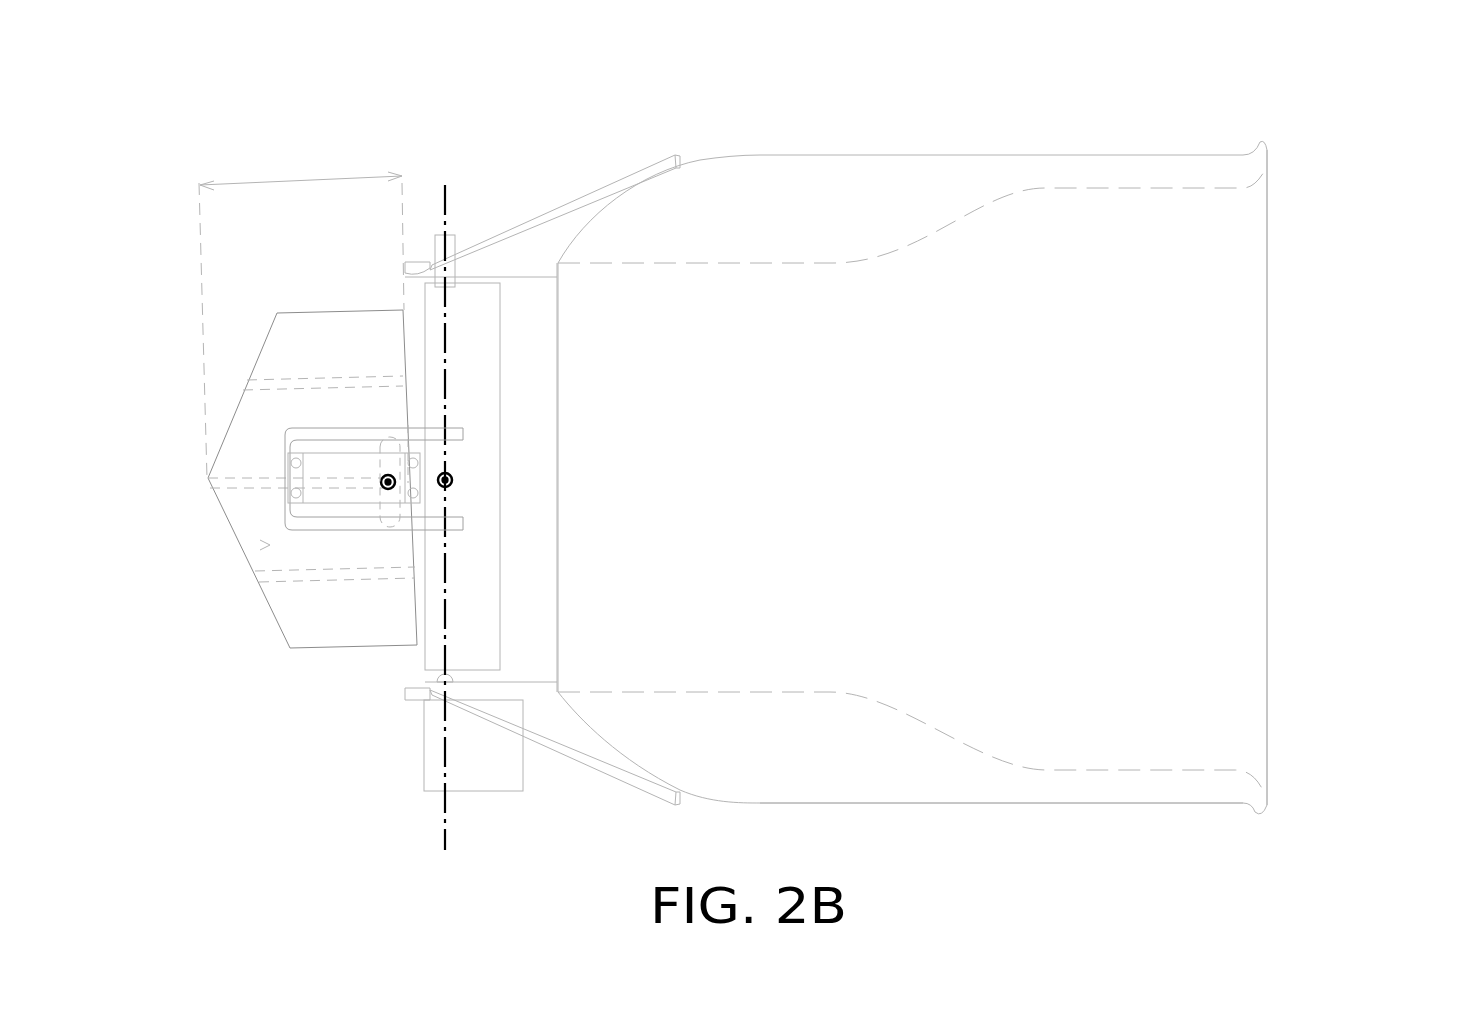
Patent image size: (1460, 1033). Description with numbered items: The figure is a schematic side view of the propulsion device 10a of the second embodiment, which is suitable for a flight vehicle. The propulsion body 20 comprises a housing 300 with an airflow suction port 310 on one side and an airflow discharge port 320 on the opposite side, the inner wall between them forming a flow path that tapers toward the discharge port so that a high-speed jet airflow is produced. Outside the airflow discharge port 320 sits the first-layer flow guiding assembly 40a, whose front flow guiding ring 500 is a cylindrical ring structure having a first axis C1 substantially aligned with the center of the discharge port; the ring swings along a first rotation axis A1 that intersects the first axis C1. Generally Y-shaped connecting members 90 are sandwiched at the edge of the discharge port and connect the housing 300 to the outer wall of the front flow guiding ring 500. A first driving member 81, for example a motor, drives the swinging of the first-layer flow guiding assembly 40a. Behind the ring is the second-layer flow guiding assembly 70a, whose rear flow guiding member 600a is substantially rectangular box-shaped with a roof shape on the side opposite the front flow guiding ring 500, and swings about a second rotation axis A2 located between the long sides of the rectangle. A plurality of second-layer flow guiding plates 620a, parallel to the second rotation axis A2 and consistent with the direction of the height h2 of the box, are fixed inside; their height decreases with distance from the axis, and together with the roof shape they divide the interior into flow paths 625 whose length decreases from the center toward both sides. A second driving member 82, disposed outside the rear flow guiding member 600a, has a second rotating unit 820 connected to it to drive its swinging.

The propulsion device 10a is at (256, 101).
The height of the rectangular box h2 is at (301, 315).
The propulsion body 20 is at (912, 138).
The housing 300 is at (953, 803).
The airflow suction port 310 is at (1300, 470).
The airflow discharge port 320 is at (550, 605).
The connecting member 90 is at (537, 243).
The front flow guiding ring 500 is at (485, 302).
The first-layer flow guiding assembly 40a is at (415, 665).
The first driving member 81 is at (433, 792).
The first rotation axis A1 is at (448, 828).
The first axis C1 is at (450, 476).
The rear flow guiding member 600a is at (332, 312).
The second-layer flow guiding plate 620a is at (272, 378).
The flow path 625 is at (262, 546).
The second driving member 82 is at (310, 503).
The second-layer flow guiding assembly 70a is at (310, 676).
The second rotating unit 820 is at (388, 525).
The second rotation axis A2 is at (385, 484).